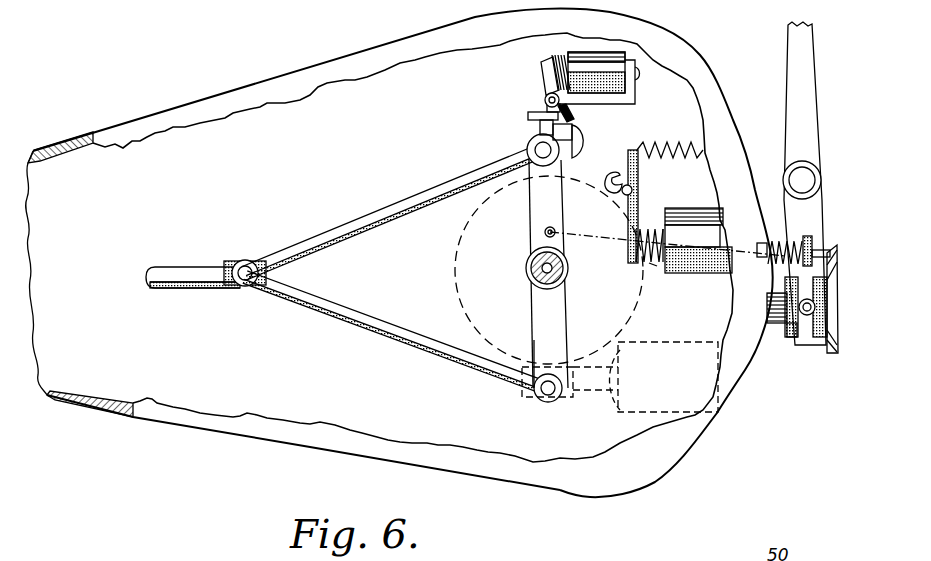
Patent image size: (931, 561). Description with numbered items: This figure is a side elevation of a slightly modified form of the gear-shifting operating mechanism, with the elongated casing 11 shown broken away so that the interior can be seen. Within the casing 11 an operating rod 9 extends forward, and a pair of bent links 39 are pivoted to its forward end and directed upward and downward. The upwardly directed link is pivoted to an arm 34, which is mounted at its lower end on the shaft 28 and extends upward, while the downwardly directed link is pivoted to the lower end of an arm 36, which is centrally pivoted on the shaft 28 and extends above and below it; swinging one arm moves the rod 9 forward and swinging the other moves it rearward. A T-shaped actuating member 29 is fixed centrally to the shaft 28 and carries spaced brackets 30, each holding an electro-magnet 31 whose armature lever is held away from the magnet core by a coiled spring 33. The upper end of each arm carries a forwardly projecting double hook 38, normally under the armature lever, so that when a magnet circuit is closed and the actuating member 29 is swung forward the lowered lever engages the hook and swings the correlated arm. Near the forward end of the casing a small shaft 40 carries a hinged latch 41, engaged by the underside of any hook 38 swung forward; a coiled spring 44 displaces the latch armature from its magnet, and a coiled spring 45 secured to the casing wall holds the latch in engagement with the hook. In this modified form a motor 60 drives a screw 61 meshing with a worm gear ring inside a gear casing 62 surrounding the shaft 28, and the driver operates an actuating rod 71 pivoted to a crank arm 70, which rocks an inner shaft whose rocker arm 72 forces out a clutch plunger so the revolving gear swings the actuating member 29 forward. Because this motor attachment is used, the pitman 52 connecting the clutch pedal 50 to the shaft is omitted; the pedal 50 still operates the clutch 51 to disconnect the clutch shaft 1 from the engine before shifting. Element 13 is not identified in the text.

The casing 11 is at (300, 73).
The operating rod 9 is at (190, 268).
The links 39 is at (361, 244).
The arm 34 is at (548, 274).
The arm 36 is at (545, 350).
The actuating member 29 is at (537, 130).
The pitman 52 is at (543, 82).
The coiled spring 33 is at (540, 70).
The electro-magnet 31 is at (568, 52).
The bracket 30 is at (620, 100).
The double hook 38 is at (583, 157).
The coiled spring 45 is at (670, 136).
The small shaft 40 is at (657, 206).
The latch 41 is at (606, 185).
The actuating rod 71 is at (598, 236).
The rocker arm 72 is at (627, 250).
The motor 13 is at (688, 274).
The coiled spring 44 is at (657, 267).
The crank arm 70 is at (543, 236).
The shaft 28 is at (527, 262).
The gear casing 62 is at (455, 262).
The screw 61 is at (526, 398).
The motor 60 is at (628, 410).
The clutch pedal 50 is at (804, 183).
The clutch 51 is at (830, 348).
The clutch shaft 1 is at (780, 325).